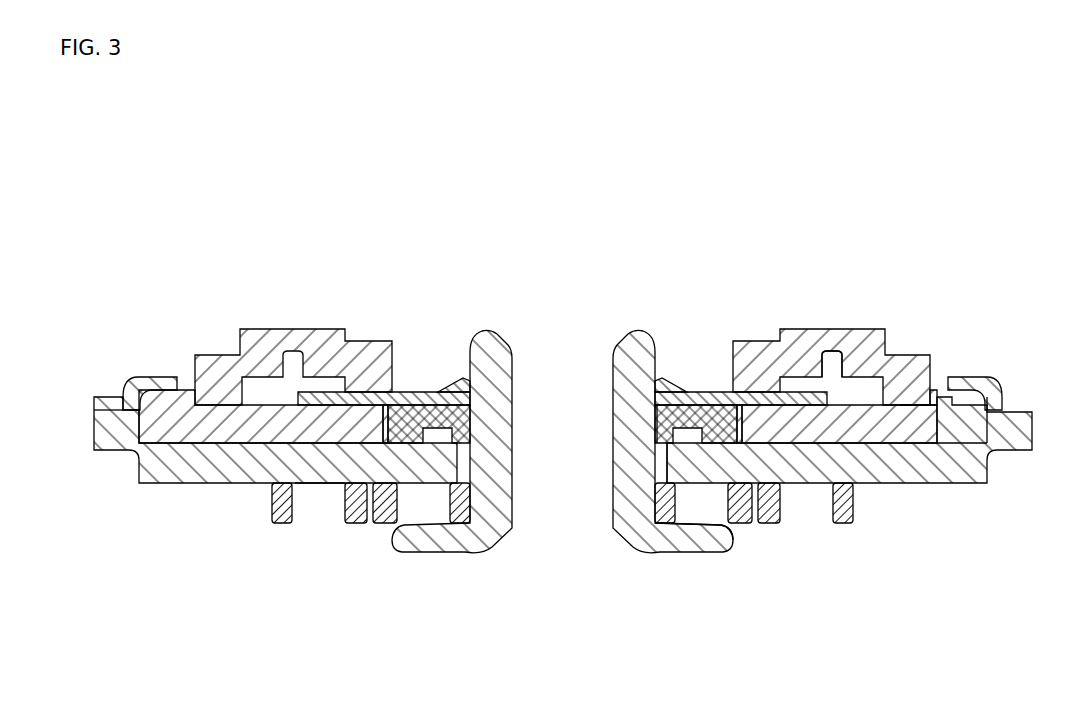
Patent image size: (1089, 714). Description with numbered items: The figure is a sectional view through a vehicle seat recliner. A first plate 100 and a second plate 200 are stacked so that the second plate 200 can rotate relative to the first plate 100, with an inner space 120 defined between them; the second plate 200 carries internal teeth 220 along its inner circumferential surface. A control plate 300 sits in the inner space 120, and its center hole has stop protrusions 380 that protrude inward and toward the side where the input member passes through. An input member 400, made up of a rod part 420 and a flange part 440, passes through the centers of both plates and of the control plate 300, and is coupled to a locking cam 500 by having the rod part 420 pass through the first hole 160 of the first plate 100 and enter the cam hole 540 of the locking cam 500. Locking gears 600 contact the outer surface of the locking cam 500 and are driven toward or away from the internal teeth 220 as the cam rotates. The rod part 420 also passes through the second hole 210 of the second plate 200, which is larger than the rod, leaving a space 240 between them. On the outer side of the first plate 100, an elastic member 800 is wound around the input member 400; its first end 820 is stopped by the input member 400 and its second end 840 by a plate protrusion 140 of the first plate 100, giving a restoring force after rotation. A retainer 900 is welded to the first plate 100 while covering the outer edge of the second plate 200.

The first plate 100 is at (955, 483).
The inner space 120 is at (856, 393).
The plate protrusion 140 is at (318, 522).
The first hole 160 is at (667, 462).
The second plate 200 is at (880, 330).
The second hole 210 is at (393, 357).
The internal teeth 220 is at (920, 392).
The space 240 is at (449, 367).
The control plate 300 is at (762, 398).
The stop protrusions 380 is at (678, 400).
The input member 400 is at (497, 552).
The rod part 420 is at (632, 352).
The flange part 440 is at (685, 540).
The locking cam 500 is at (695, 420).
The cam hole 540 is at (655, 423).
The locking gears 600 is at (890, 427).
The elastic member 800 is at (357, 535).
The first end 820 is at (463, 522).
The second end 840 is at (283, 522).
The retainer 900 is at (1003, 387).